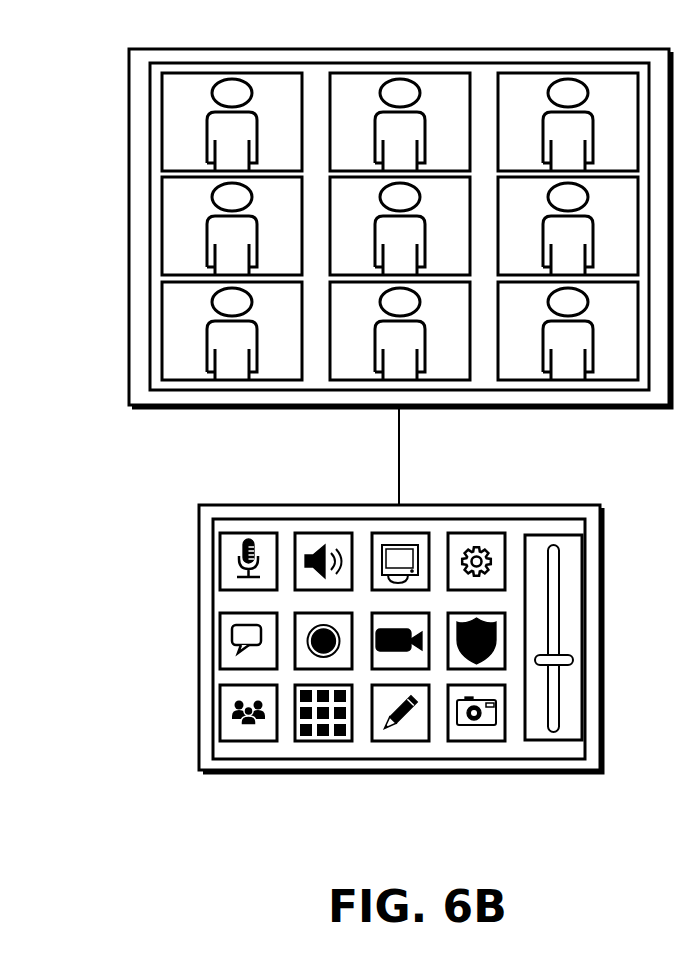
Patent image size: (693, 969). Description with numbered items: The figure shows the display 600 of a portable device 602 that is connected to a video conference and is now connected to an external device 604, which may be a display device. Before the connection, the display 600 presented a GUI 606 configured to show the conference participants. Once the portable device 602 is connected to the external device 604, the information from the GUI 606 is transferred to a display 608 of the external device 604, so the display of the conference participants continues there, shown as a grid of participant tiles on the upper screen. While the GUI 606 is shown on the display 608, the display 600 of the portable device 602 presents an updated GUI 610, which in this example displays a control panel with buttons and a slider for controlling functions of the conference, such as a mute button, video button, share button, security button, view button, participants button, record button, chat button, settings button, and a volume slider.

The display 600 is at (200, 592).
The portable device 602 is at (399, 647).
The external device 604 is at (361, 204).
The GUI 606 is at (312, 85).
The display 608 is at (350, 196).
The updated GUI 610 is at (437, 737).